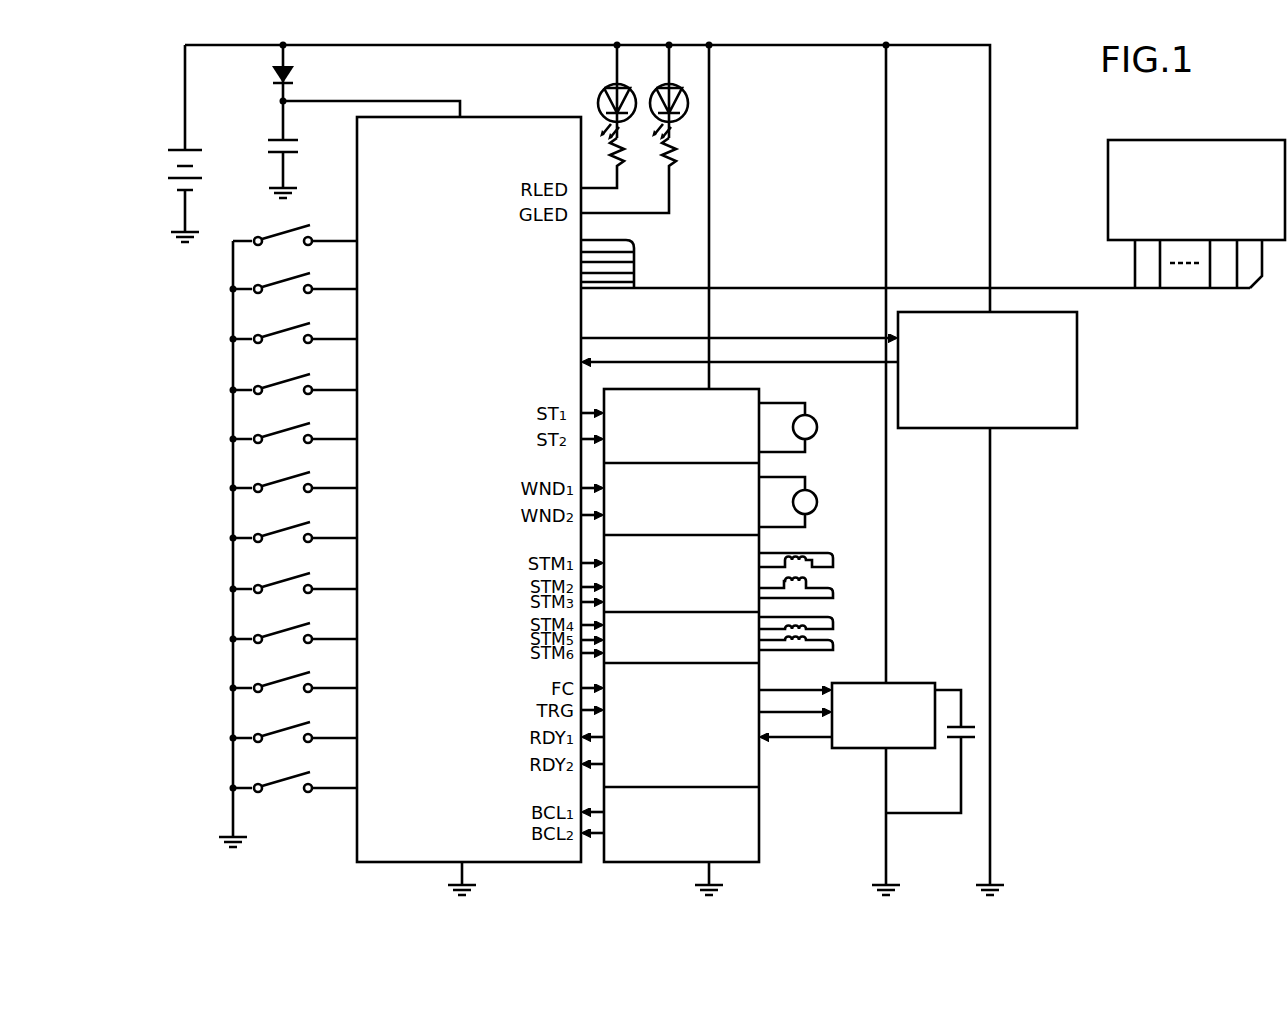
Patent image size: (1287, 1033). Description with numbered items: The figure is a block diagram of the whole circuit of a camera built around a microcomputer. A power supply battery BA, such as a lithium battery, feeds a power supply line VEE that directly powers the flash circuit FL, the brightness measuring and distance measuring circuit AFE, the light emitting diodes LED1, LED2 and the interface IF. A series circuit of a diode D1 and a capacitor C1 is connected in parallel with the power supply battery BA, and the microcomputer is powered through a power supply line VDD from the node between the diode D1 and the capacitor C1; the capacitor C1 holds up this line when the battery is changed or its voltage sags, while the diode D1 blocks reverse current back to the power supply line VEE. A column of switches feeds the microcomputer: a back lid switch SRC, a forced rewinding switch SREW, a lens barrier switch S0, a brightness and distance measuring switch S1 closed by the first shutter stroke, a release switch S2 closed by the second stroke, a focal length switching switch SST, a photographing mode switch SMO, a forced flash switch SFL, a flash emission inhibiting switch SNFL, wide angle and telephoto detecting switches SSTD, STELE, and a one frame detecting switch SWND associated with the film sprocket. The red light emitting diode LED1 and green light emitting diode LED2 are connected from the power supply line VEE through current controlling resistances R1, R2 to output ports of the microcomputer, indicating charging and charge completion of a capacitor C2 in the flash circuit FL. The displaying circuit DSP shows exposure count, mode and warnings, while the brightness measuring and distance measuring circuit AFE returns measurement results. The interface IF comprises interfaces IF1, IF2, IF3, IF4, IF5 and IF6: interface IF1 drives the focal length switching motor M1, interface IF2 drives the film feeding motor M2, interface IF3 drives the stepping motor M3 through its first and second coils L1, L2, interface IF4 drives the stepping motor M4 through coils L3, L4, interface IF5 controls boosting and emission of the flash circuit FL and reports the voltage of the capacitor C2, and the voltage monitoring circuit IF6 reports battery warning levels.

The power supply line VEE is at (181, 32).
The power supply line VDD is at (371, 96).
The power supply battery BA is at (201, 143).
The diode D1 is at (268, 84).
The capacitor C1 is at (271, 149).
The switch SRC is at (295, 249).
The switch SREW is at (294, 297).
The switch S0 is at (294, 347).
The brightness measuring/distance measuring switch S1 is at (294, 398).
The release switch S2 is at (294, 447).
The switch SST is at (294, 496).
The switch SMO is at (294, 546).
The switch SFL is at (294, 597).
The flash emission inhibiting switch SNFL is at (294, 647).
The wide angle position detecting switch SSTD is at (294, 696).
The telephoto detecting switch STELE is at (294, 746).
The switch SWND is at (294, 796).
The first light emitting diode LED1 is at (597, 101).
The second light emitting diode LED2 is at (656, 101).
The resistance R1 is at (616, 163).
The resistance R2 is at (642, 175).
The interface IF is at (641, 868).
The interface IF1 is at (748, 392).
The interface IF2 is at (762, 467).
The interface IF3 is at (762, 545).
The interface IF4 is at (762, 662).
The interface IF5 is at (762, 764).
The voltage monitoring circuit IF6 is at (762, 817).
The motor for switching focal length M1 is at (817, 425).
The motor for feeding film M2 is at (817, 500).
The stepping motor M3 is at (826, 570).
The stepping motor M4 is at (812, 636).
The first coil L1 is at (820, 556).
The second coil L2 is at (822, 600).
The first coil L3 is at (812, 620).
The second coil L4 is at (810, 650).
The flash circuit FL is at (918, 683).
The capacitor C2 is at (935, 751).
The brightness measuring/distance measuring circuit AFE is at (1078, 402).
The displaying circuit DSP is at (1108, 170).